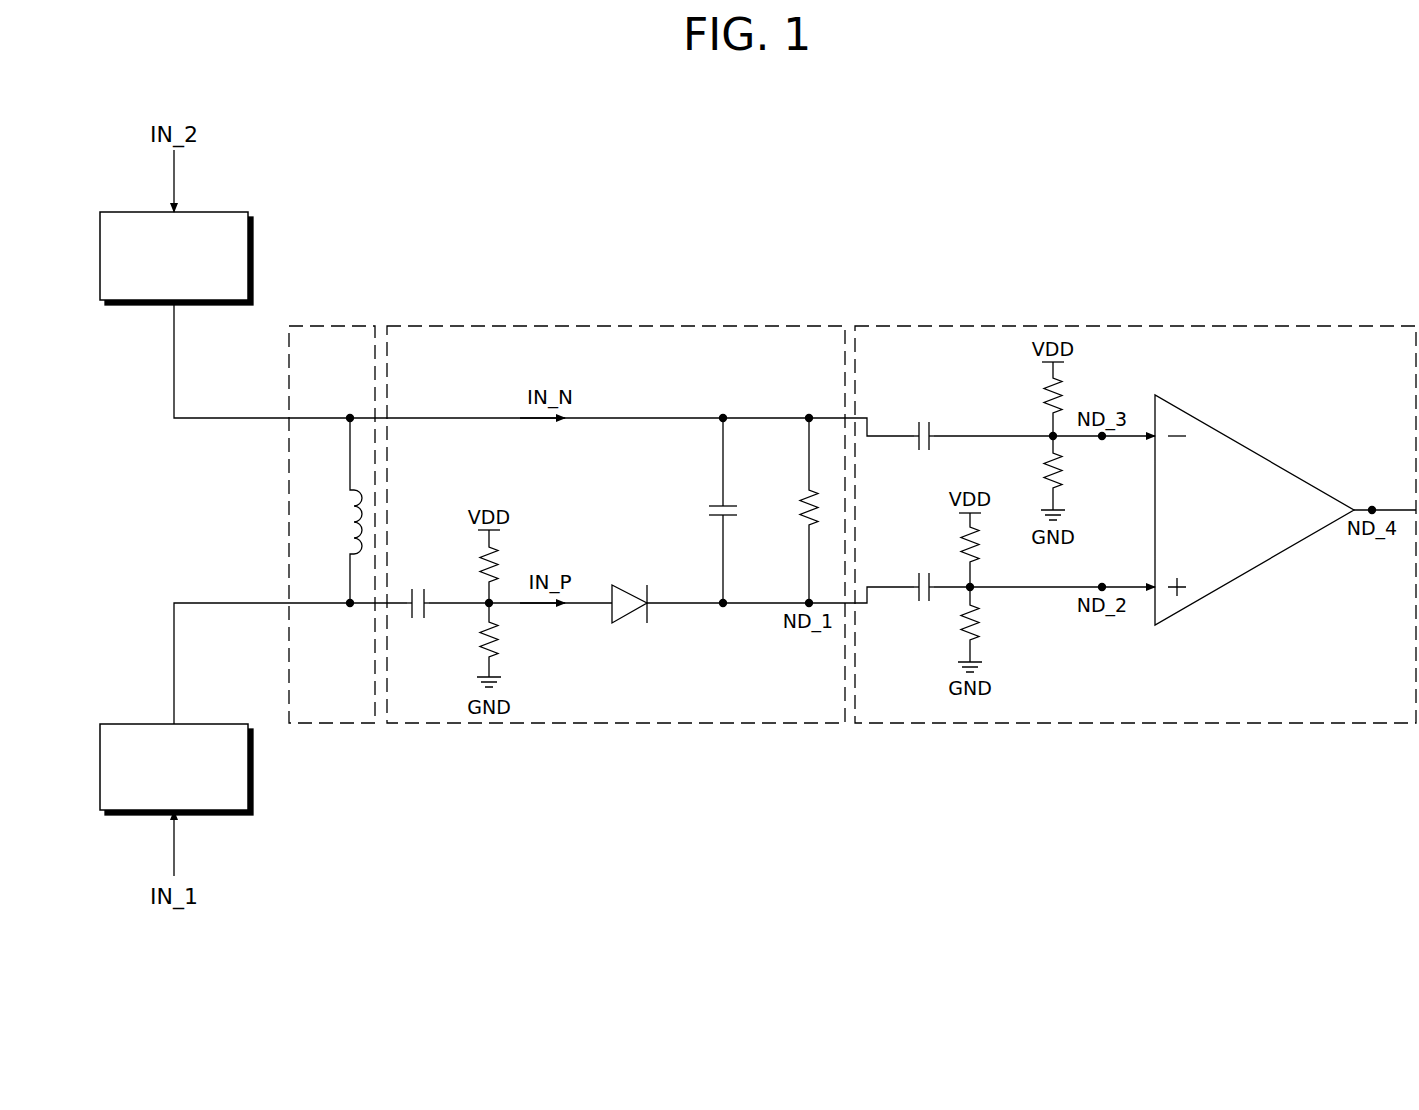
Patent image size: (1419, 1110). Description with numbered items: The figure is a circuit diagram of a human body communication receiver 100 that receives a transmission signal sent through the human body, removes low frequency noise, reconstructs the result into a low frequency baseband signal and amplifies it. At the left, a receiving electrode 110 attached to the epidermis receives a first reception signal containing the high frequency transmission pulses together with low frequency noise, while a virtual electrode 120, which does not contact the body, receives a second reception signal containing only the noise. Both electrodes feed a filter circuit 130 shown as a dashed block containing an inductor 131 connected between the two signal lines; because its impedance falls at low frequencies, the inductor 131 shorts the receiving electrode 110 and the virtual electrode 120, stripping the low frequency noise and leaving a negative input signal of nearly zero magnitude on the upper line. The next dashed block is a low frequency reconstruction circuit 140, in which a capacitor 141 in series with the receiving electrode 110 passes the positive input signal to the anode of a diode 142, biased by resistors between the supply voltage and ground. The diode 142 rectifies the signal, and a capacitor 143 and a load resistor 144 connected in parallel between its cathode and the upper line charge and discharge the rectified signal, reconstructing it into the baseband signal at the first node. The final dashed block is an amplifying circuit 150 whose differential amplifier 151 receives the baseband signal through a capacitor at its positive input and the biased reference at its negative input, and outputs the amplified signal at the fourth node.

The human body communication receiver 100 is at (1371, 233).
The receiving electrode 110 is at (224, 814).
The virtual electrode 120 is at (226, 212).
The filter circuit 130 is at (330, 326).
The inductor 131 is at (334, 510).
The low frequency reconstruction circuit 140 is at (601, 326).
The capacitor 141 is at (416, 591).
The diode 142 is at (628, 622).
The capacitor 143 is at (702, 510).
The load resistor 144 is at (786, 510).
The amplifying circuit 150 is at (1157, 326).
The differential amplifier 151 is at (1278, 462).